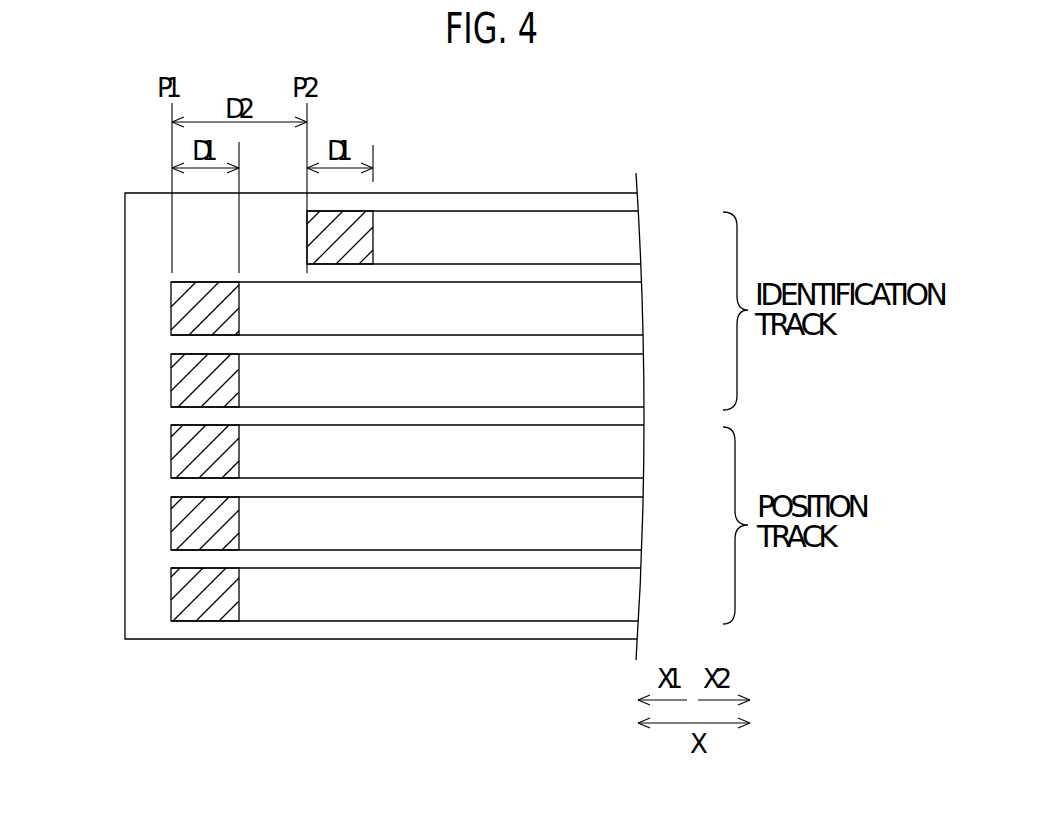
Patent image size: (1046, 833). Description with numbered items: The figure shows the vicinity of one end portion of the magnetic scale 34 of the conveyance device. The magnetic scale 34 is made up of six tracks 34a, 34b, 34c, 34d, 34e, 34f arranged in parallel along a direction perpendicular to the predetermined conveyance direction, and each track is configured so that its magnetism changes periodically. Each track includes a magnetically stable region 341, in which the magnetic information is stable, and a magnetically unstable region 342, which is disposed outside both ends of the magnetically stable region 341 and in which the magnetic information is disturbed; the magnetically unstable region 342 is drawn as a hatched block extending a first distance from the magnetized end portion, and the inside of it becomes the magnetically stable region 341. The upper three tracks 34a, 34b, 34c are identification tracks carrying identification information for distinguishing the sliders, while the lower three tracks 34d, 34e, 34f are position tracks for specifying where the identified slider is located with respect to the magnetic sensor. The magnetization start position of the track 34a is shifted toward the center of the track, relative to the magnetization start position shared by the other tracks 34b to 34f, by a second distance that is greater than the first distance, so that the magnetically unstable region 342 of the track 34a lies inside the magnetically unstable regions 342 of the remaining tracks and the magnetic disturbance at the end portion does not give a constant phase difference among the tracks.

The magnetic scale 34 is at (552, 192).
The magnetically stable region 341 is at (463, 211).
The magnetically unstable region 342 is at (307, 222).
The track 34a is at (621, 236).
The track 34b is at (621, 306).
The track 34c is at (621, 377).
The track 34d is at (621, 449).
The track 34e is at (621, 521).
The track 34f is at (621, 592).